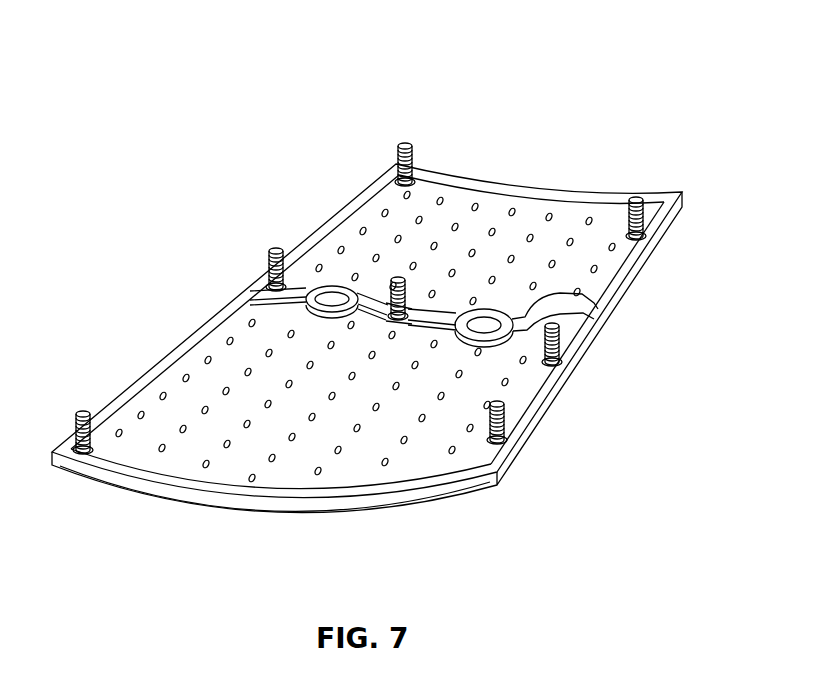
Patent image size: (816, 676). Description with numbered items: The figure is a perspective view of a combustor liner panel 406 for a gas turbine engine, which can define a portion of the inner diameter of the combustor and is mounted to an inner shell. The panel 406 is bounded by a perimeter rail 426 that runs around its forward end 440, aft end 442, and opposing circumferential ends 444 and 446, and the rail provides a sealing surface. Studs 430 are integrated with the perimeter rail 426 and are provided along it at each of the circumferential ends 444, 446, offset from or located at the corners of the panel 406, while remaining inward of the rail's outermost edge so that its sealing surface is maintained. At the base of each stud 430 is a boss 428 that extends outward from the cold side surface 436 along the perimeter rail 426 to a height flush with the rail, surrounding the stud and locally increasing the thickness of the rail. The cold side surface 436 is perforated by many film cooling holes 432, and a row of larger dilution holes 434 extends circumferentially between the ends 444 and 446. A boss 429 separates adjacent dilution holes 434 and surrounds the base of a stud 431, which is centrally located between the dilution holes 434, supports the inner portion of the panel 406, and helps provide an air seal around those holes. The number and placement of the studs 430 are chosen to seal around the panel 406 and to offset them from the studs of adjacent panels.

The panel 406 is at (597, 109).
The perimeter rail 426 is at (118, 466).
The bosses 428 is at (72, 437).
The boss 429 is at (384, 324).
The studs 430 is at (644, 208).
The stud 431 is at (416, 296).
The film cooling holes 432 is at (140, 417).
The dilution holes 434 is at (604, 300).
The cold side surface 436 is at (357, 222).
The forward end 440 is at (272, 518).
The aft end 442 is at (482, 178).
The circumferential end 444 is at (203, 322).
The circumferential end 446 is at (574, 366).